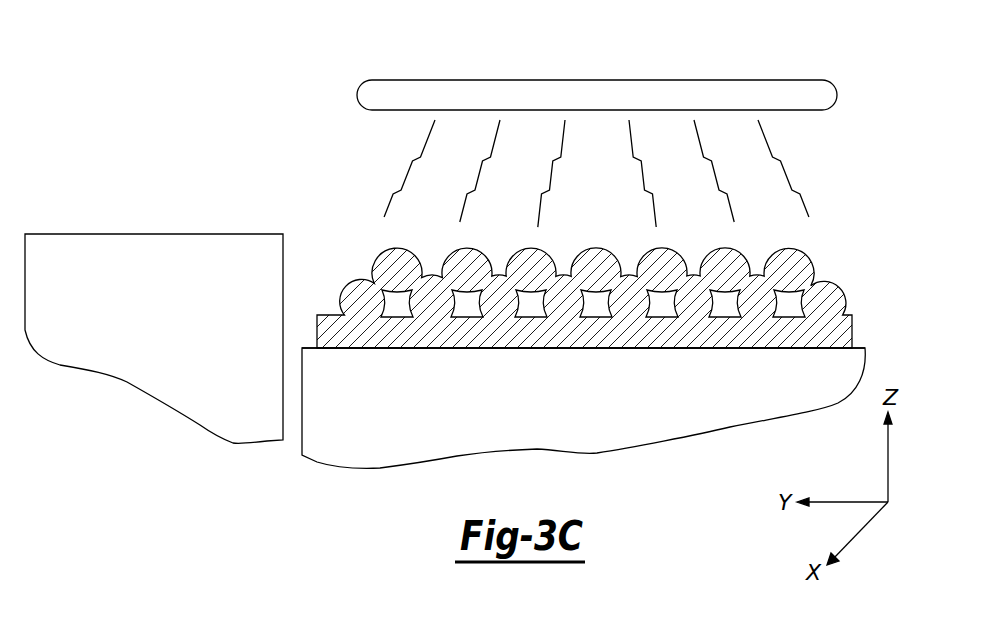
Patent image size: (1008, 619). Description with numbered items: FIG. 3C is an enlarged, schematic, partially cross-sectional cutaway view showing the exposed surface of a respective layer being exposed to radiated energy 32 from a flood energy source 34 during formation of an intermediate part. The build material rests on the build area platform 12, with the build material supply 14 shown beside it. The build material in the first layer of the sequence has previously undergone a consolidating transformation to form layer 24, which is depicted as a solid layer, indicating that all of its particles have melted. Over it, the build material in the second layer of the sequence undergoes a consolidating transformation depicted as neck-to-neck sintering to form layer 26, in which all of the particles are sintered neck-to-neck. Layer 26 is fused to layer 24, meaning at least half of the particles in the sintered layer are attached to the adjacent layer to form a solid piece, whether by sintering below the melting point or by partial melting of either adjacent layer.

The build area platform 12 is at (703, 417).
The build material supply 14 is at (100, 350).
The layer 24 is at (577, 348).
The layer 26 is at (848, 277).
The radiated energy 32 is at (787, 173).
The flood energy source 34 is at (597, 80).